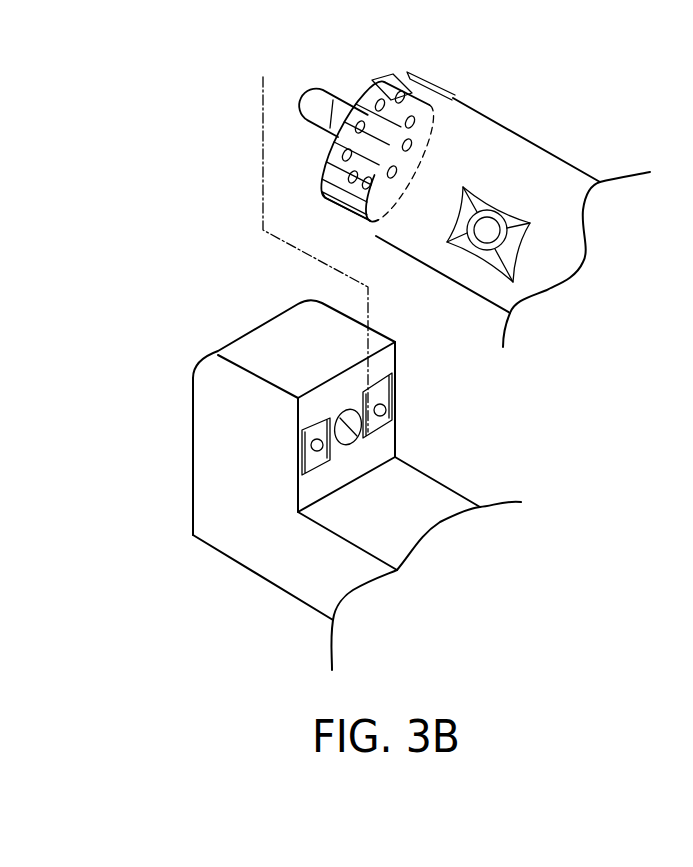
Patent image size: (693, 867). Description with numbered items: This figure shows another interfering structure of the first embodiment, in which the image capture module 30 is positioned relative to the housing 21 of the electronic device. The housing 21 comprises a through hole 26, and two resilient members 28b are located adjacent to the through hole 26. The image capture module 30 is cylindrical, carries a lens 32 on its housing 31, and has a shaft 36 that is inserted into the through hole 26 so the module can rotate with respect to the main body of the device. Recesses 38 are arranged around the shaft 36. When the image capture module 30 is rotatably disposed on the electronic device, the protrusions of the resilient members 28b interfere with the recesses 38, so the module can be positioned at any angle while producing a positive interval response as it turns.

The housing 21 is at (232, 458).
The through hole 26 is at (300, 478).
The resilient members 28b is at (303, 433).
The image capture module 30 is at (597, 165).
The housing 31 is at (457, 152).
The lens 32 is at (482, 228).
The shaft 36 is at (327, 103).
The recesses 38 is at (333, 208).